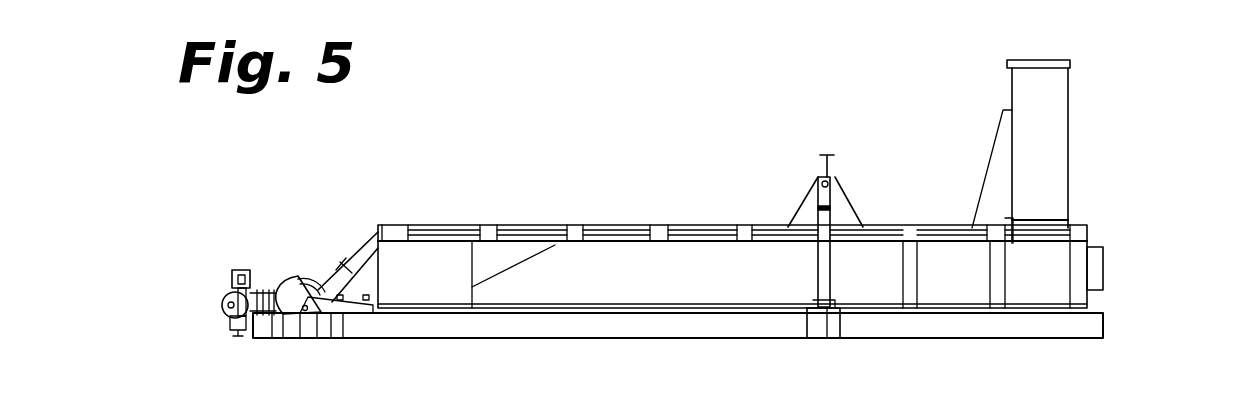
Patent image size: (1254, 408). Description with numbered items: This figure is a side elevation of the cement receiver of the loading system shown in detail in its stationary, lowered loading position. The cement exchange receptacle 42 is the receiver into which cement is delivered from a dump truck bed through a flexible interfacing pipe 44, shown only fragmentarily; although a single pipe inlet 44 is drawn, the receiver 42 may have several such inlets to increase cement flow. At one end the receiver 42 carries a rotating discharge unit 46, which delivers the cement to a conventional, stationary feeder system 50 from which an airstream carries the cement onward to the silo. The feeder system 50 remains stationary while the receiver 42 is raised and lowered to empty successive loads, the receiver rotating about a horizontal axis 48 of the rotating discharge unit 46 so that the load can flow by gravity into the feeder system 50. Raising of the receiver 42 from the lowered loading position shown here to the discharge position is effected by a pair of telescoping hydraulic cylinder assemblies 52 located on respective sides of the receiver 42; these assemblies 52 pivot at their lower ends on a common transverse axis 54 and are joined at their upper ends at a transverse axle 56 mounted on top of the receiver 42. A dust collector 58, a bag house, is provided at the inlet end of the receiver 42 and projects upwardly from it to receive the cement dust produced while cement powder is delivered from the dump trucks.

The cement exchange receptacle 42 is at (477, 200).
The flexible interfacing pipe 44 is at (1103, 262).
The rotating discharge unit 46 is at (284, 285).
The horizontal axis 48 is at (322, 286).
The feeder system 50 is at (243, 270).
The telescoping hydraulic cylinder assemblies 52 is at (814, 270).
The common transverse axis 54 is at (838, 318).
The transverse axle 56 is at (836, 186).
The dust collector 58 is at (1046, 59).